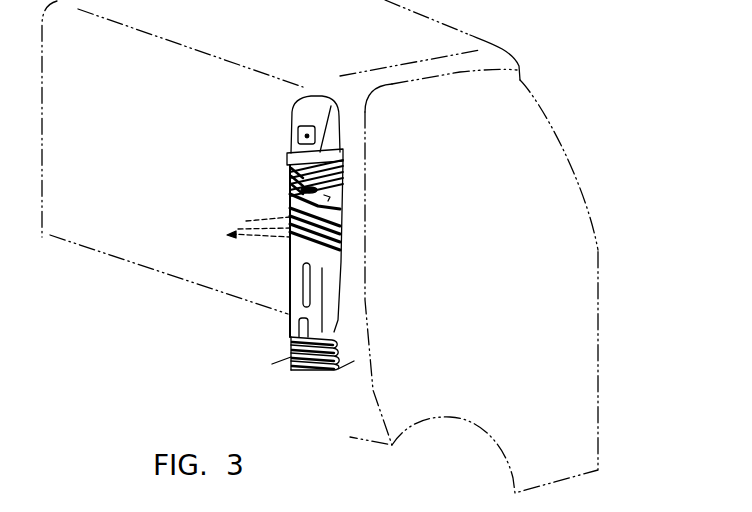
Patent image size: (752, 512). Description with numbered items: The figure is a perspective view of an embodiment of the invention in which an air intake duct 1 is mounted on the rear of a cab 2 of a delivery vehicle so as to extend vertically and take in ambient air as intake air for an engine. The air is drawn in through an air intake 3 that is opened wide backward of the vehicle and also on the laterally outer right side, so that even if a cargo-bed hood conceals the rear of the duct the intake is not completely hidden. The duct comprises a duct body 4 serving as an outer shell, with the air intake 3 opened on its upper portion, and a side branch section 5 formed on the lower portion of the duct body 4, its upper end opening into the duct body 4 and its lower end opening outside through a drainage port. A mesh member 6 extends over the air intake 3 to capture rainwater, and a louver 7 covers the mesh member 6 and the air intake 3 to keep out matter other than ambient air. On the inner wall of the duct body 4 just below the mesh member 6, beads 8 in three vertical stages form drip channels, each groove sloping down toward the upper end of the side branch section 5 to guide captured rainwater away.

The air intake duct 1 is at (260, 127).
The cab 2 is at (489, 52).
The air intake 3 is at (300, 210).
The duct body 4 is at (341, 258).
The side branch section 5 is at (338, 303).
The mesh member 6 is at (298, 206).
The louver 7 is at (279, 157).
The beads 8 is at (248, 233).